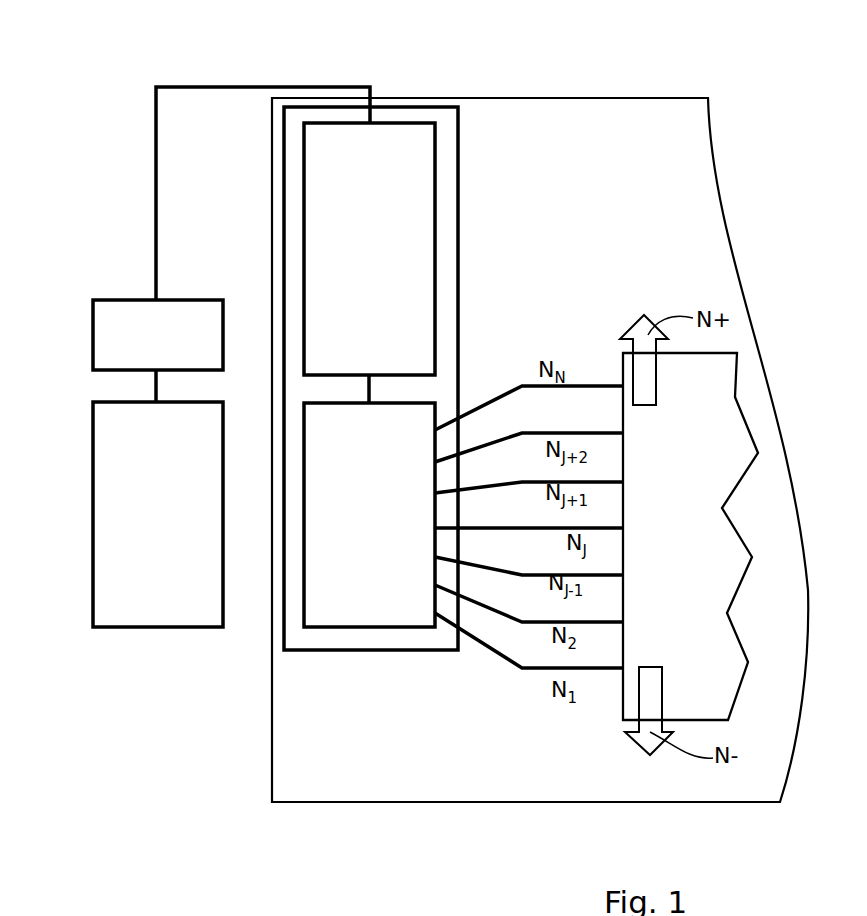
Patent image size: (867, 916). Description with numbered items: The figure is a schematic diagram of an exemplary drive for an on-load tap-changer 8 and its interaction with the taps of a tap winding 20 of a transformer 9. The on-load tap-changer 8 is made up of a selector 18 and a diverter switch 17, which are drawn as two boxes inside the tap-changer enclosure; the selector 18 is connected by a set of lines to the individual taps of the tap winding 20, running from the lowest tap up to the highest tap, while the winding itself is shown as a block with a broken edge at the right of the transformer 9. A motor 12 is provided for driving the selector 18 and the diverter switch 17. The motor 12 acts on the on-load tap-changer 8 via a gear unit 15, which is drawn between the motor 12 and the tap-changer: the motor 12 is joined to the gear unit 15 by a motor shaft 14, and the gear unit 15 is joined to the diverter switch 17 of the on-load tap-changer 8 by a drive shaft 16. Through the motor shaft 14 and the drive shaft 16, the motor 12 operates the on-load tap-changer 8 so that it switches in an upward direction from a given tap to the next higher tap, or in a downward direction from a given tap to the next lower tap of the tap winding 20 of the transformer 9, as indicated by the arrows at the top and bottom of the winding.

The on-load tap-changer 8 is at (400, 107).
The transformer 9 is at (665, 98).
The motor 12 is at (169, 515).
The motor shaft 14 is at (155, 388).
The gear unit 15 is at (172, 347).
The drive shaft 16 is at (221, 86).
The diverter switch 17 is at (381, 263).
The selector 18 is at (381, 513).
The tap winding 20 is at (684, 518).